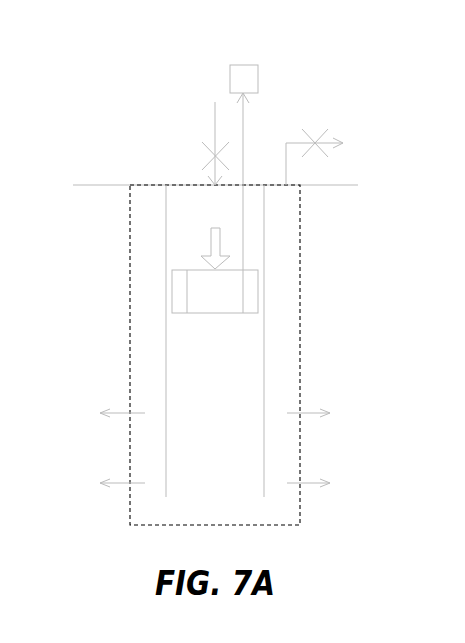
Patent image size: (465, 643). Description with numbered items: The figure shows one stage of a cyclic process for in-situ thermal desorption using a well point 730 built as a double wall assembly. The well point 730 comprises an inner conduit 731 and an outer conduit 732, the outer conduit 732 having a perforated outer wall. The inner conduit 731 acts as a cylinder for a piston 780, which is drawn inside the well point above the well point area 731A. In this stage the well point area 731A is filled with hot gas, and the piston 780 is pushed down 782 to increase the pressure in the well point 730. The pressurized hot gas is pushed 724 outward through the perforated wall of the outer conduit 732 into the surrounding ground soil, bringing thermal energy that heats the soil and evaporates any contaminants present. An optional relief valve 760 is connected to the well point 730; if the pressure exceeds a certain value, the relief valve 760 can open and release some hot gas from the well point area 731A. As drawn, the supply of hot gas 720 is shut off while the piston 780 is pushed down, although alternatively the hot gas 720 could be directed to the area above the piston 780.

The hot gas 720 is at (215, 128).
The relief valve 760 is at (243, 79).
The piston pushed down 782 is at (211, 240).
The piston 780 is at (213, 293).
The well point 730 is at (102, 370).
The inner conduit 731 is at (243, 355).
The well point area 731A is at (215, 475).
The hot gas pushed to ground soil 724 is at (302, 410).
The outer conduit 732 is at (148, 447).